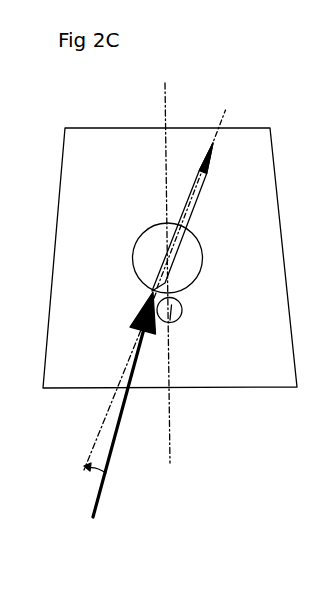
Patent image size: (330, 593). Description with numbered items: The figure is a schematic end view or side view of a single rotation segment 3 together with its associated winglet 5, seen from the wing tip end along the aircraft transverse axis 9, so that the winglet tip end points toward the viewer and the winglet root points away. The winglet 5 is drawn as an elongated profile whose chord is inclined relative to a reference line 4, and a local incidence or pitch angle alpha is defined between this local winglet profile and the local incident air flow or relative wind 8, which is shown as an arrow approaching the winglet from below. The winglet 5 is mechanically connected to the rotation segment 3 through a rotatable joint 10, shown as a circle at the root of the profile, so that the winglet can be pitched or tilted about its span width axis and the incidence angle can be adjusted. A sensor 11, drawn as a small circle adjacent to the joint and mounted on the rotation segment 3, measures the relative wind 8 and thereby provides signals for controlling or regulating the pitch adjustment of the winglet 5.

The rotation segment 3 is at (90, 152).
The normal axis 4 is at (169, 271).
The winglet 5 is at (198, 190).
The local incident air flow or relative wind 8 is at (115, 409).
The aircraft transverse axis 9 is at (2, 323).
The rotatable joint 10 is at (152, 245).
The sensor 11 is at (181, 310).